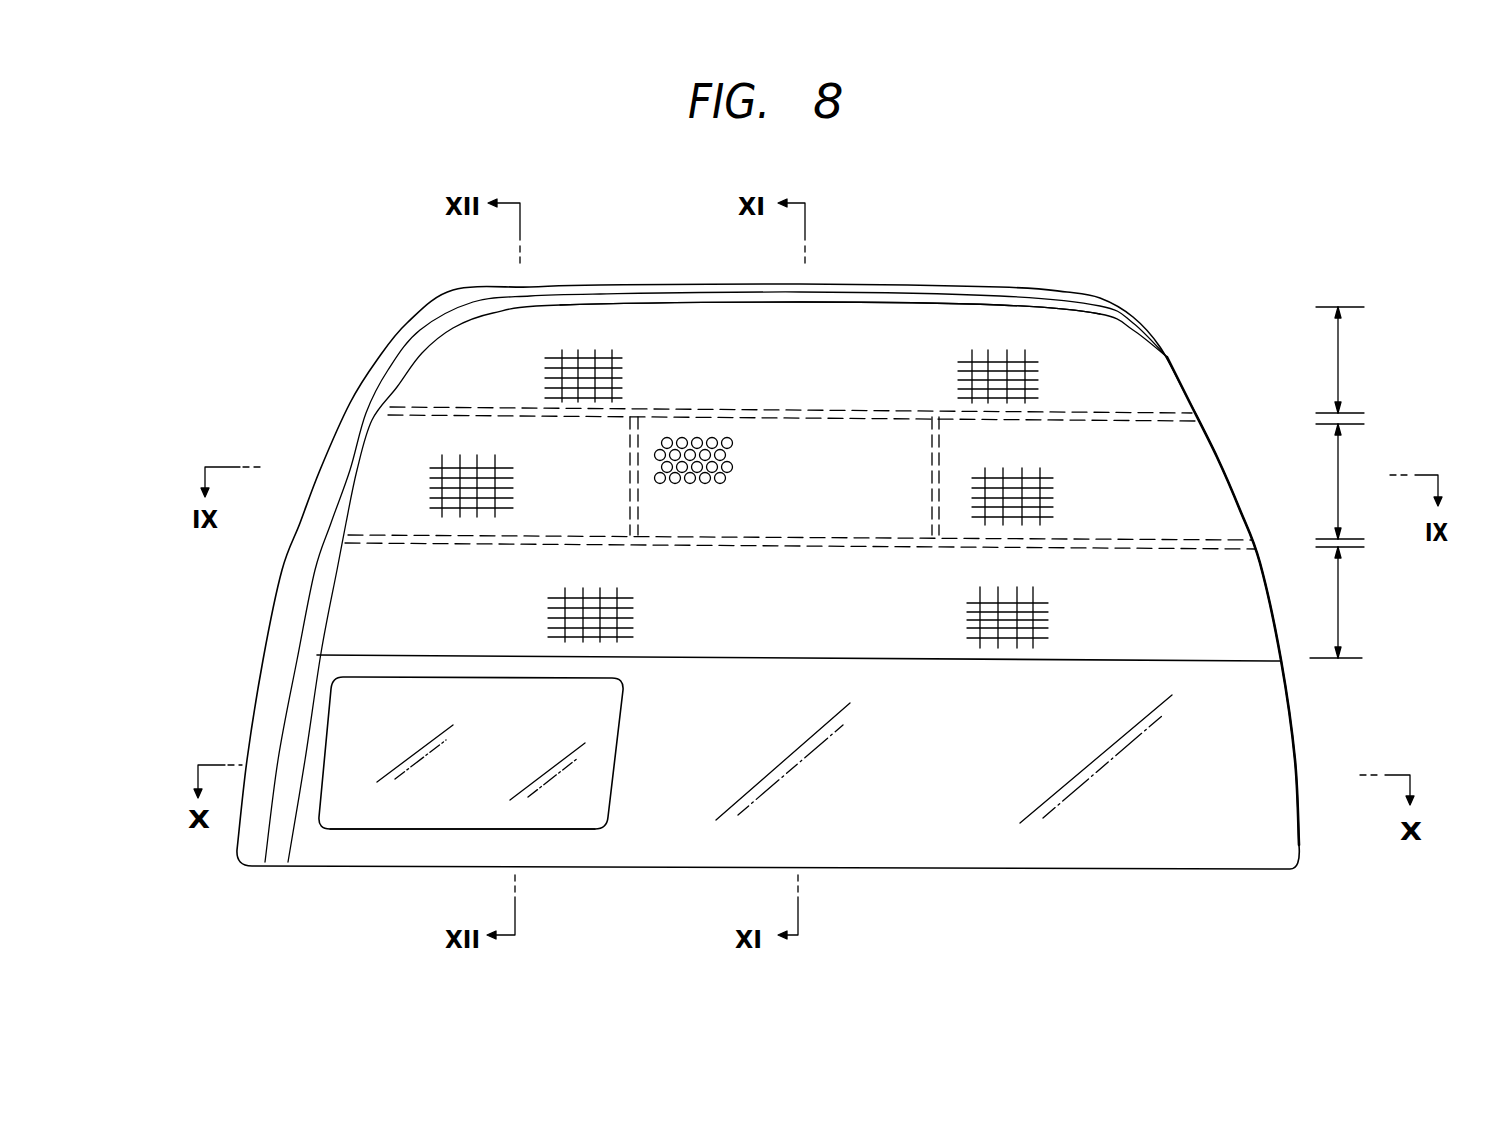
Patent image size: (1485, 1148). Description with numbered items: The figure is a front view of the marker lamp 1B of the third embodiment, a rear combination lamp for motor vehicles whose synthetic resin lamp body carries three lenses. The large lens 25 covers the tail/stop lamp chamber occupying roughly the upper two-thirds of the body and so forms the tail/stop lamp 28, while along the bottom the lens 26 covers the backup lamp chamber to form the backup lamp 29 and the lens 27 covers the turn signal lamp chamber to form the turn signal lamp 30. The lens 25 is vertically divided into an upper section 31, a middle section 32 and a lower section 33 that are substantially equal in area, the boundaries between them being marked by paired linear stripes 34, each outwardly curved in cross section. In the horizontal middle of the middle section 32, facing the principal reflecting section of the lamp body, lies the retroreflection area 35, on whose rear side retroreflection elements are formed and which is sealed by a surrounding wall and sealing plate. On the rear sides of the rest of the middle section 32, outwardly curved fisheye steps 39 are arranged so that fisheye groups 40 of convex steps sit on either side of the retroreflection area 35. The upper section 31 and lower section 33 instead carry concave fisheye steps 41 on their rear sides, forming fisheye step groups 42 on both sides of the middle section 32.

The marker lamp 1B is at (1169, 227).
The lens 25 is at (930, 332).
The lens 26 is at (400, 812).
The lens 27 is at (1045, 850).
The tail/stop lamp 28 is at (600, 337).
The backup lamp 29 is at (567, 810).
The turn signal lamp 30 is at (920, 820).
The upper section 31 is at (1338, 359).
The middle section 32 is at (1338, 470).
The lower section 33 is at (1338, 601).
The paired linear stripes 34 is at (1156, 407).
The retroreflection area 35 is at (820, 437).
The fisheye steps 39 is at (1040, 482).
The fisheye groups 40 is at (266, 532).
The concave fisheye steps 41 is at (1015, 360).
The fisheye step groups 42 is at (360, 302).